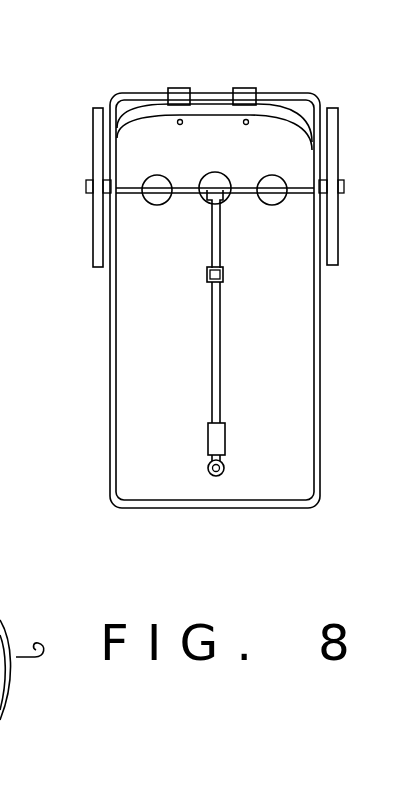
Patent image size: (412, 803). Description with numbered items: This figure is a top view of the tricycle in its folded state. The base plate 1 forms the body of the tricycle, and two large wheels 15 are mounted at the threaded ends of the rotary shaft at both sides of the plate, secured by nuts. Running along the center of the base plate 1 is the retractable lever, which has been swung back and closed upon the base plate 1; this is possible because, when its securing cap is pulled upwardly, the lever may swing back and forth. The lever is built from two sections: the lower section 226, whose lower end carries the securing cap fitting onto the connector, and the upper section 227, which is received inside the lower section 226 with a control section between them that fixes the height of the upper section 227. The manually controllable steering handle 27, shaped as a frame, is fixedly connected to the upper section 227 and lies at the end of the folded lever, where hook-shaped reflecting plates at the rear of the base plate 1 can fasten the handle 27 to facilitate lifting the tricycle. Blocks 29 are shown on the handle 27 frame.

The base plate 1 is at (307, 458).
The large wheels 15 is at (96, 160).
The steering handle 27 is at (113, 94).
The clamp blocks 29 is at (174, 93).
The lower section 226 is at (215, 330).
The upper section 227 is at (210, 245).